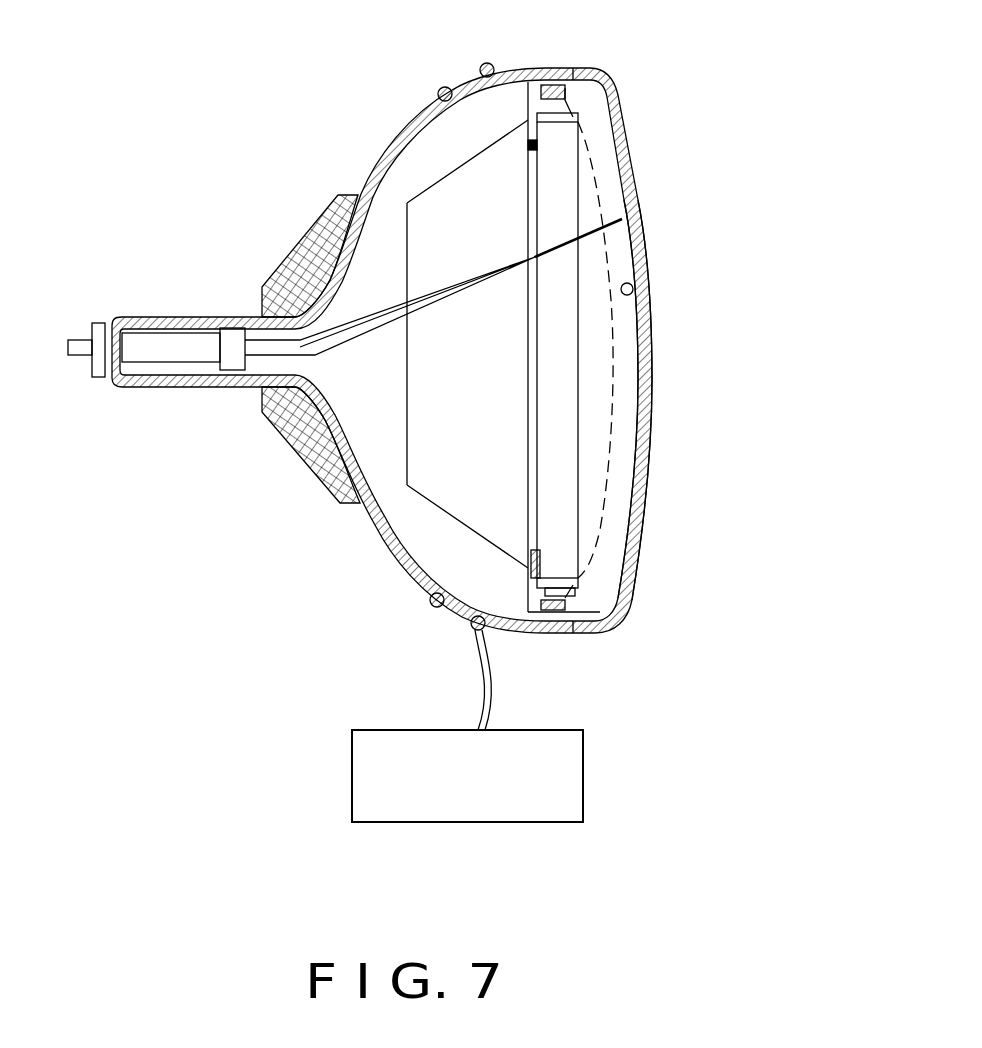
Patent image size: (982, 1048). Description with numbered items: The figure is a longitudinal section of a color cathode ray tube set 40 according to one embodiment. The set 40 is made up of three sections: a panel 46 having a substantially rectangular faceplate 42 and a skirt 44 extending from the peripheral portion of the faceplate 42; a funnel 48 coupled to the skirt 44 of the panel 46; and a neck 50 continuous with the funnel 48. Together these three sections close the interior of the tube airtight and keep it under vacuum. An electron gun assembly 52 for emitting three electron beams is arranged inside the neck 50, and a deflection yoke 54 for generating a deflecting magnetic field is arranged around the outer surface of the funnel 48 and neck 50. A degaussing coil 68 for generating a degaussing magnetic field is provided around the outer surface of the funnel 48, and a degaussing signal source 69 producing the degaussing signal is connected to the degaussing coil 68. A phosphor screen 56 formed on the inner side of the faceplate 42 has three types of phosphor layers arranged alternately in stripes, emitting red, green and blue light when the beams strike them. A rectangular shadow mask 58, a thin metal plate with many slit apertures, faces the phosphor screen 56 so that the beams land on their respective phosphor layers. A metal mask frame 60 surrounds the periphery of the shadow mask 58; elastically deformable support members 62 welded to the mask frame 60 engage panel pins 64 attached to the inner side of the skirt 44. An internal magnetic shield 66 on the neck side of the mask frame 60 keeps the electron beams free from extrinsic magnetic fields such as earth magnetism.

The color cathode ray tube set 40 is at (407, 100).
The faceplate 42 is at (636, 168).
The skirt 44 is at (573, 67).
The panel 46 is at (667, 225).
The funnel 48 is at (403, 154).
The neck 50 is at (165, 386).
The electron gun assembly 52 is at (160, 335).
The deflection yoke 54 is at (300, 250).
The phosphor screen 56 is at (634, 290).
The shadow mask 58 is at (613, 366).
The mask frame 60 is at (567, 568).
The support member 62 is at (568, 97).
The panel pin 64 is at (548, 82).
The internal magnetic shield 66 is at (430, 503).
The degaussing coil 68 is at (480, 65).
The degaussing signal source 69 is at (583, 771).